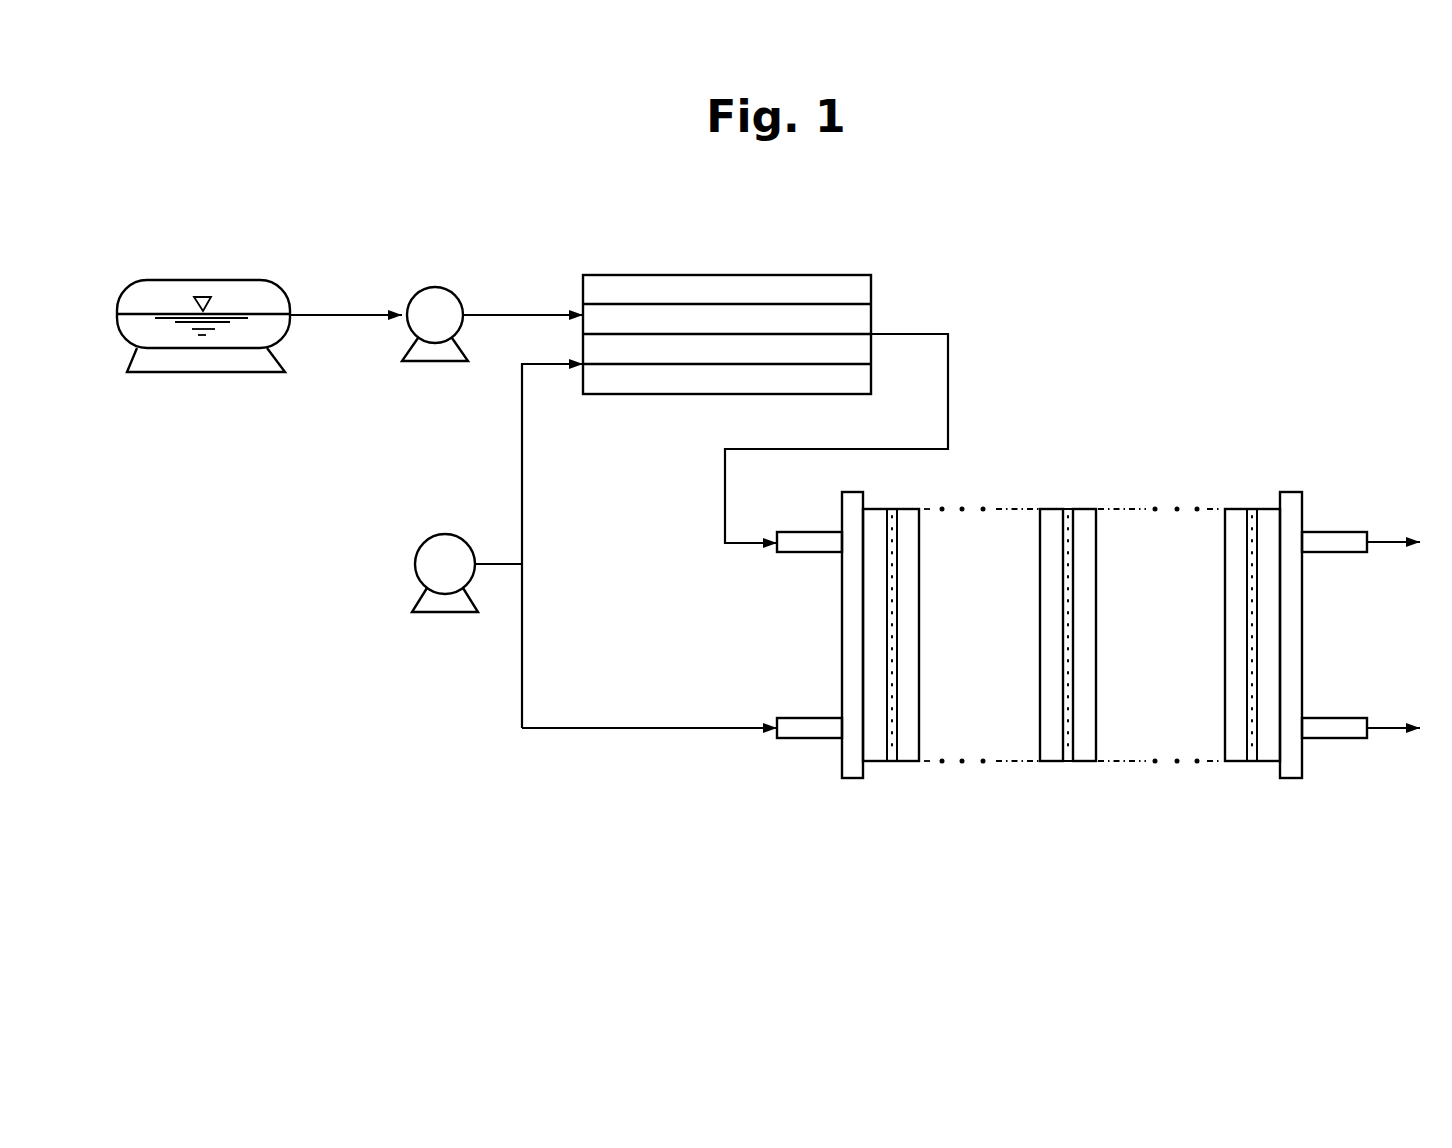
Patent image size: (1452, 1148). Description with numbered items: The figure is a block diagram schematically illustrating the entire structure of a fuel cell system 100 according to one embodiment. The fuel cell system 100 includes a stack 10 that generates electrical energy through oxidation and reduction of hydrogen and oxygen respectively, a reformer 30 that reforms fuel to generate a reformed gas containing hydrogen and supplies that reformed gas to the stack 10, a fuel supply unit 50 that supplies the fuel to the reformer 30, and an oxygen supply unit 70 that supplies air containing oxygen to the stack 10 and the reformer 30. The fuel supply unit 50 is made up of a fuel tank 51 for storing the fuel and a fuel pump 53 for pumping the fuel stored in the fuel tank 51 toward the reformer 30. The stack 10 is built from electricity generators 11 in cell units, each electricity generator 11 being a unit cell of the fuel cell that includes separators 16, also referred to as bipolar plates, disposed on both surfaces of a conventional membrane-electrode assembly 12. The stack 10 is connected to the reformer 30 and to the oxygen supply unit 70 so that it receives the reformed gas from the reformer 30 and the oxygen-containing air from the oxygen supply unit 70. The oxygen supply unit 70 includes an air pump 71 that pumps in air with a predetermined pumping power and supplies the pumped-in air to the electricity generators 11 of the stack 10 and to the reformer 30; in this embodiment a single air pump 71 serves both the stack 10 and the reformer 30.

The fuel cell system 100 is at (751, 210).
The stack 10 is at (1362, 607).
The electricity generator 11 is at (1105, 866).
The membrane-electrode assembly 12 is at (1068, 761).
The separator 16 is at (1052, 761).
The reformer 30 is at (876, 272).
The fuel supply unit 50 is at (243, 426).
The fuel tank 51 is at (233, 280).
The fuel pump 53 is at (436, 288).
The oxygen supply unit 70 is at (392, 553).
The air pump 71 is at (416, 569).